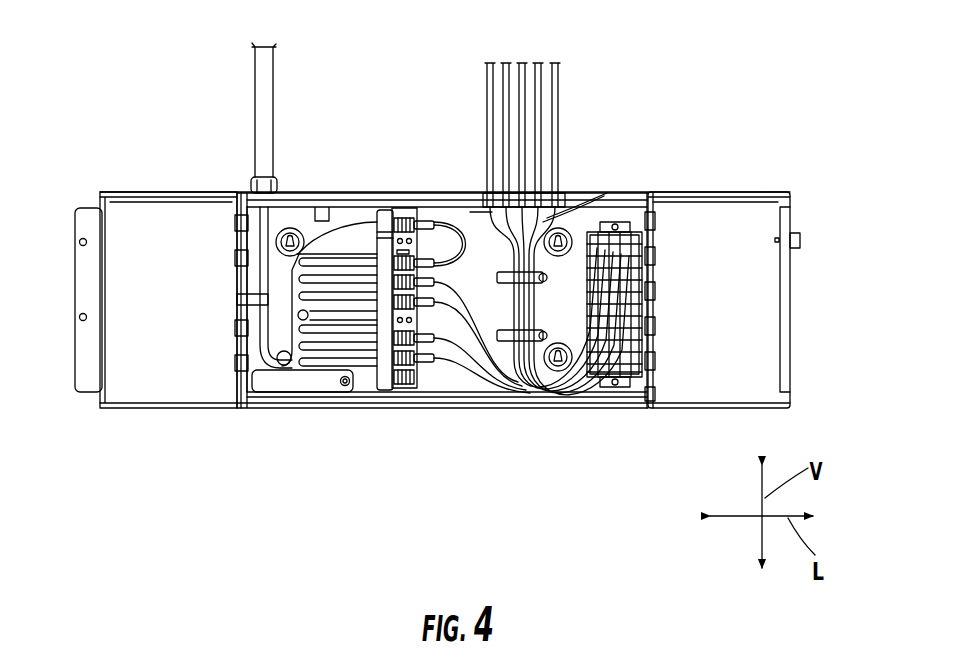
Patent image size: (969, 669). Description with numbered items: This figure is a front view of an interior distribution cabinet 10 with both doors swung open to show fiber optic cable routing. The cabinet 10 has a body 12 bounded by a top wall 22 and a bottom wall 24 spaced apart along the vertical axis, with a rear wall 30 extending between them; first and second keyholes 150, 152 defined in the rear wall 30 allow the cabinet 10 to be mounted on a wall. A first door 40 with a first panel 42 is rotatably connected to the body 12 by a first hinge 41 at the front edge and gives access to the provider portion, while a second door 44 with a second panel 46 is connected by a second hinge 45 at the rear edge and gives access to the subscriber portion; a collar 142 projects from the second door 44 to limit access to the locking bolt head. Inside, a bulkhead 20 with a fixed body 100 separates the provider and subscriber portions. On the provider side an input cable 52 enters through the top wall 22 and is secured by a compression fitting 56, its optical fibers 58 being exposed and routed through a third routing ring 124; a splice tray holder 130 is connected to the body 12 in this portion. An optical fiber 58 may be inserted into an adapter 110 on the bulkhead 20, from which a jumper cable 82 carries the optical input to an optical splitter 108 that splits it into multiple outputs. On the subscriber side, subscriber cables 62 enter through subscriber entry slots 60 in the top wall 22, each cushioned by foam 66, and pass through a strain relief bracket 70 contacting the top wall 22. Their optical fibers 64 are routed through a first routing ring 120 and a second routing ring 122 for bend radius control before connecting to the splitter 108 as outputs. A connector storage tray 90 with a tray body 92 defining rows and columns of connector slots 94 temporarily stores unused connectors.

The interior distribution cabinet 10 is at (185, 148).
The body 12 is at (235, 190).
The bulkhead 20 is at (428, 305).
The top wall 22 is at (325, 206).
The bottom wall 24 is at (548, 406).
The rear wall 30 is at (456, 216).
The first door 40 is at (120, 190).
The first hinge 41 is at (228, 385).
The first panel 42 is at (160, 210).
The second door 44 is at (775, 185).
The second hinge 45 is at (665, 212).
The second panel 46 is at (715, 210).
The input cable 52 is at (280, 90).
The compression fitting 56 is at (283, 185).
The optical fibers 58 is at (264, 293).
The subscriber entry slots 60 is at (552, 185).
The subscriber cables 62 is at (563, 98).
The optical fibers 64 is at (582, 210).
The foam 66 is at (550, 185).
The strain relief bracket 70 is at (477, 216).
The jumper cable 82 is at (437, 210).
The connector storage tray 90 is at (637, 388).
The tray body 92 is at (606, 389).
The connector slots 94 is at (646, 360).
The fixed body 100 is at (412, 392).
The optical splitter 108 is at (348, 258).
The adapter 110 is at (397, 210).
The first routing ring 120 is at (548, 284).
The second routing ring 122 is at (507, 396).
The third routing ring 124 is at (240, 305).
The splice tray holder 130 is at (283, 385).
The collar 142 is at (802, 215).
The first keyhole 150 is at (565, 372).
The second keyhole 152 is at (308, 206).